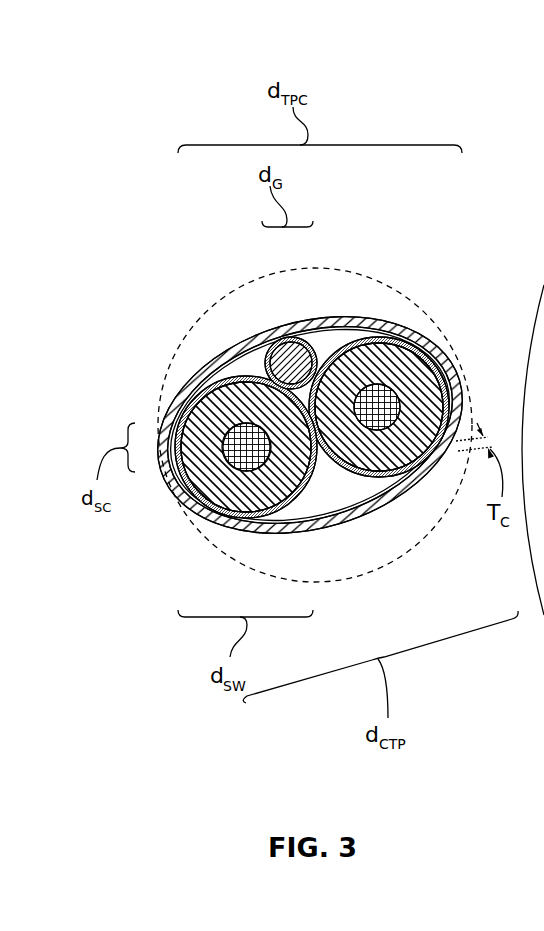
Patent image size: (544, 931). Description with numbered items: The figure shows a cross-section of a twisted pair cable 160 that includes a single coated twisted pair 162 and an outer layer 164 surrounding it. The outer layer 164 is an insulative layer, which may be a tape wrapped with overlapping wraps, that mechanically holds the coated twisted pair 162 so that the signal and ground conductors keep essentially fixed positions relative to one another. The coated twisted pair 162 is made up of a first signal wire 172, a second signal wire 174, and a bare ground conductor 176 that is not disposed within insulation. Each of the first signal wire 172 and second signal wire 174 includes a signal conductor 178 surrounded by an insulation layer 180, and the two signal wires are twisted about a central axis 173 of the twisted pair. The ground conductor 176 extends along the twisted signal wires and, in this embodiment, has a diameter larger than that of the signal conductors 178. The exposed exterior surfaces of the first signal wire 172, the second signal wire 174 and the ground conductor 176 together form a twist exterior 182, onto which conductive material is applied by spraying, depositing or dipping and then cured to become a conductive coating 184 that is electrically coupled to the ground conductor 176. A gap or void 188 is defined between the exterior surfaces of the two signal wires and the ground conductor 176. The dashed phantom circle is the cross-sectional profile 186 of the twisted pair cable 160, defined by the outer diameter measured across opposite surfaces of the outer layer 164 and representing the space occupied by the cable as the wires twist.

The twisted pair cable 160 is at (188, 307).
The coated twisted pair 162 is at (341, 493).
The outer layer 164 is at (316, 321).
The first signal wire 172 is at (211, 493).
The central axis 173 is at (384, 355).
The second signal wire 174 is at (311, 427).
The ground conductor 176 is at (298, 357).
The signal conductor 178 is at (390, 385).
The insulation layer 180 is at (426, 407).
The twist exterior 182 is at (302, 399).
The conductive coating 184 is at (301, 492).
The cross-sectional profile 186 is at (348, 277).
The void 188 is at (302, 399).